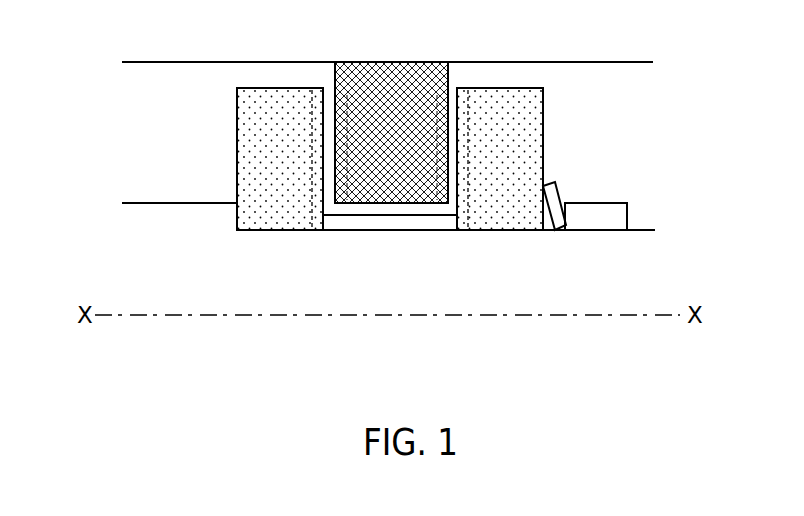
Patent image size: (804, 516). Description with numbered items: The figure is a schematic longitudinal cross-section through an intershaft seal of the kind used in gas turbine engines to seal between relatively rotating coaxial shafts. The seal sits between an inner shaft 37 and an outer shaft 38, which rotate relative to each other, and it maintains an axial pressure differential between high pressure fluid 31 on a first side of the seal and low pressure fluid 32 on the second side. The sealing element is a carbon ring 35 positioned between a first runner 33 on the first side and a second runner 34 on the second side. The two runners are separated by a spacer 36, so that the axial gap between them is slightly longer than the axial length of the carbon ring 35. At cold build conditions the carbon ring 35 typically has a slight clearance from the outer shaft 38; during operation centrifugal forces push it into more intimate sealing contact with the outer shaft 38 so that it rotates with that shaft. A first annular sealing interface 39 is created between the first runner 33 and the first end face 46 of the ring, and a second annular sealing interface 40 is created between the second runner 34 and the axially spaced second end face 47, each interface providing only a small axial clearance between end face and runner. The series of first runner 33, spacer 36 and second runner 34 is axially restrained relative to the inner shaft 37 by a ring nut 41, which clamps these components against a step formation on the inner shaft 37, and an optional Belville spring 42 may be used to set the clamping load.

The high pressure fluid 31 is at (173, 152).
The low pressure fluid 32 is at (607, 138).
The first runner 33 is at (275, 102).
The second runner 34 is at (515, 103).
The carbon ring 35 is at (397, 75).
The spacer 36 is at (385, 222).
The inner shaft 37 is at (655, 231).
The outer shaft 38 is at (620, 62).
The first annular sealing interface 39 is at (323, 90).
The second annular sealing interface 40 is at (450, 87).
The ring nut 41 is at (615, 215).
The Belville spring 42 is at (558, 190).
The first end face 46 is at (335, 160).
The second end face 47 is at (450, 163).